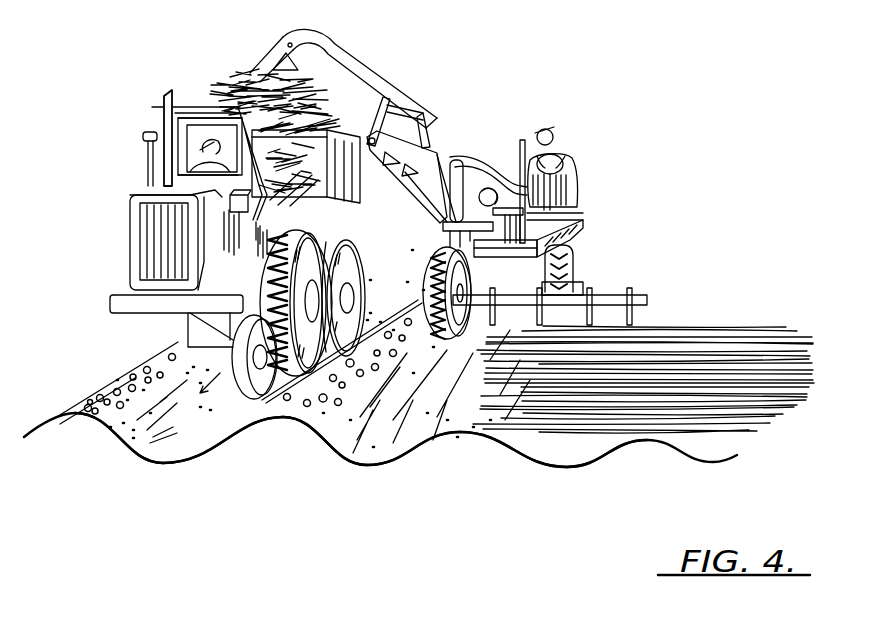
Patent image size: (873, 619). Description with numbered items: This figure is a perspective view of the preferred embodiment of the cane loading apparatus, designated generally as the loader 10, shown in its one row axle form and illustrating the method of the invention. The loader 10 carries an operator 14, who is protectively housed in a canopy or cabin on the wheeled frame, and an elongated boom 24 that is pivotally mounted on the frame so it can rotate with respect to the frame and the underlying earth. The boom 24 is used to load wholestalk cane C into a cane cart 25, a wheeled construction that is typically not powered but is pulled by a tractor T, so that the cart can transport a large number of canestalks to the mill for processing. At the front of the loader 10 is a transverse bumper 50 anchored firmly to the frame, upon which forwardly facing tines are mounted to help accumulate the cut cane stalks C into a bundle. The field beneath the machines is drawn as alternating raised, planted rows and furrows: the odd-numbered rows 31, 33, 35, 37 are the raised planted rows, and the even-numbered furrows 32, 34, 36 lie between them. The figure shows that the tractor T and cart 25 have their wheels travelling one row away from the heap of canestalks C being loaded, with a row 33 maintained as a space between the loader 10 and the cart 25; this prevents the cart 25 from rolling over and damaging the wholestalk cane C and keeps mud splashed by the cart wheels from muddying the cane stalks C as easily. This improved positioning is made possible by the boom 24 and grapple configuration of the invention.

The cane loader 10 is at (578, 100).
The operator 14 is at (575, 146).
The elongated boom 24 is at (370, 82).
The cane cart 25 is at (338, 217).
The transverse bumper 50 is at (613, 300).
The raised/planted row 31 is at (75, 416).
The furrow 32 is at (157, 465).
The raised/planted row 33 is at (283, 419).
The furrow 34 is at (367, 467).
The raised/planted row 35 is at (460, 435).
The furrow 36 is at (557, 468).
The raised/planted row 37 is at (653, 442).
The tractor T is at (128, 231).
The wholestalk cane C is at (240, 70).